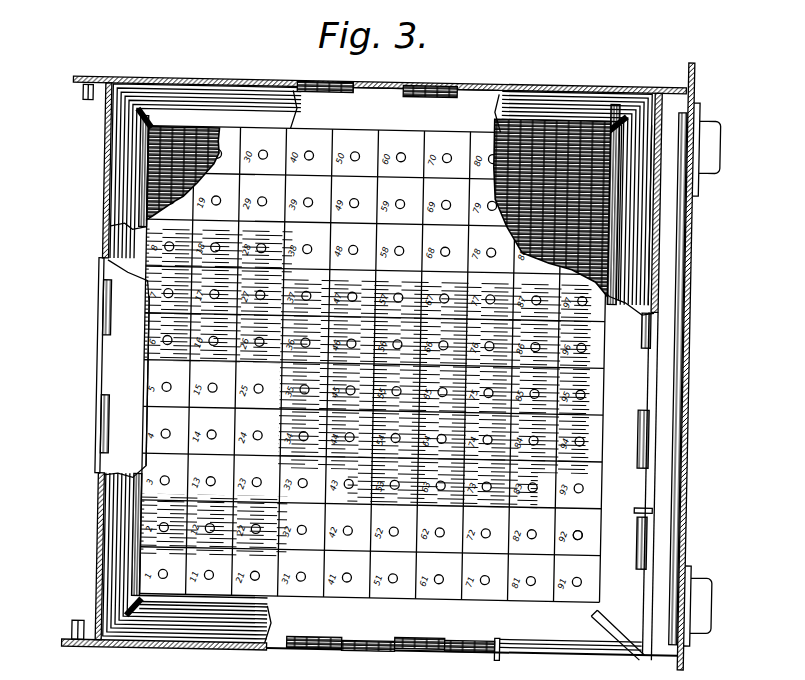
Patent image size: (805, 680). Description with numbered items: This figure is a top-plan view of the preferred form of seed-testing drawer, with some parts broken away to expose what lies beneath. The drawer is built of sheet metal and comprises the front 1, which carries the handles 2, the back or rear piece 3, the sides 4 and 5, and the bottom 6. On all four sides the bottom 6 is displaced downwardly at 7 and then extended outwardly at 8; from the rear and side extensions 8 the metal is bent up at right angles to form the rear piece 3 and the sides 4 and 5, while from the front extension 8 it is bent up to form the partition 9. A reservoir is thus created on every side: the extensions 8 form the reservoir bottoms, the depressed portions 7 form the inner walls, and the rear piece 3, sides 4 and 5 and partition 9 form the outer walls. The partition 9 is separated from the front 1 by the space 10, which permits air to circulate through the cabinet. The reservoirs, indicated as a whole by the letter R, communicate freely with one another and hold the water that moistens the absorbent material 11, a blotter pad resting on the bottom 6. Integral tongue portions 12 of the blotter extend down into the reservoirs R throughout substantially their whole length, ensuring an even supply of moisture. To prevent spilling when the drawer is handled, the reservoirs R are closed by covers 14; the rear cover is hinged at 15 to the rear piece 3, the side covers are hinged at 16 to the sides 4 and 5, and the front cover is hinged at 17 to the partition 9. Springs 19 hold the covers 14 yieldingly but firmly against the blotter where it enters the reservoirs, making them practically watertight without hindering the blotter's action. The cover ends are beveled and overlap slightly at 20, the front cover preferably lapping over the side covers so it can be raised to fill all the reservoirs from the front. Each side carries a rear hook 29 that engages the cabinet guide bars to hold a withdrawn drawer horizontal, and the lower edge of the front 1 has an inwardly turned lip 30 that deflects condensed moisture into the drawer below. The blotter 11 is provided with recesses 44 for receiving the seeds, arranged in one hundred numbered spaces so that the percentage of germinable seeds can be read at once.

The front 1 is at (689, 352).
The handles 2 is at (716, 170).
The back or rear piece 3 is at (108, 212).
The side 4 is at (189, 82).
The side 5 is at (217, 652).
The bottom 6 is at (582, 140).
The downwardly displaced portion 7 is at (138, 172).
The outward extension 8 is at (630, 290).
The partition 9 is at (656, 303).
The space 10 is at (663, 378).
The absorbent material 11 is at (148, 392).
The tongue portions 12 is at (132, 546).
The covers 14 is at (470, 104).
The hinge of rear cover 15 is at (102, 305).
The hinges of side covers 16 is at (422, 88).
The hinge of front cover 17 is at (648, 528).
The springs 19 is at (655, 505).
The overlap of cover ends 20 is at (612, 640).
The hook 29 is at (78, 95).
The lip 30 is at (678, 430).
The recesses 44 is at (586, 533).
The reservoirs R is at (236, 88).